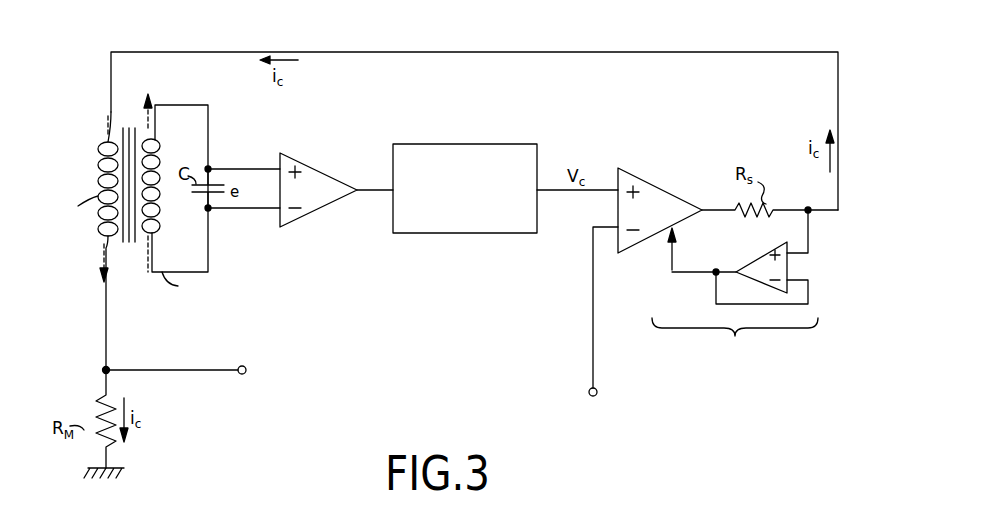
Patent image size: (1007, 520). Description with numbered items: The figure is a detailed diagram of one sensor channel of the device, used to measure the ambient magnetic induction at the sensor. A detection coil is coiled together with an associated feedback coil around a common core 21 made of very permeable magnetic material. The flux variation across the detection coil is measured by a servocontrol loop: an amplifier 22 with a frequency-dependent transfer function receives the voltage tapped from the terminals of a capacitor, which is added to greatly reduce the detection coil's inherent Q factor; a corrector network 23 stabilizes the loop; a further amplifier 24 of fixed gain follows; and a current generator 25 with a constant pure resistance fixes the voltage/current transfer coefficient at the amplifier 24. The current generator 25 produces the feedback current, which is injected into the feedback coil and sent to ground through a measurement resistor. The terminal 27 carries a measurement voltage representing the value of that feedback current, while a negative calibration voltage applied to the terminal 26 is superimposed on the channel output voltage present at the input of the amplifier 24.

The common core 21 is at (125, 126).
The amplifier 22 is at (318, 212).
The corrector network 23 is at (480, 233).
The amplifier 24 is at (666, 184).
The current generator 25 is at (735, 336).
The terminal 26 is at (588, 397).
The terminal 27 is at (246, 366).